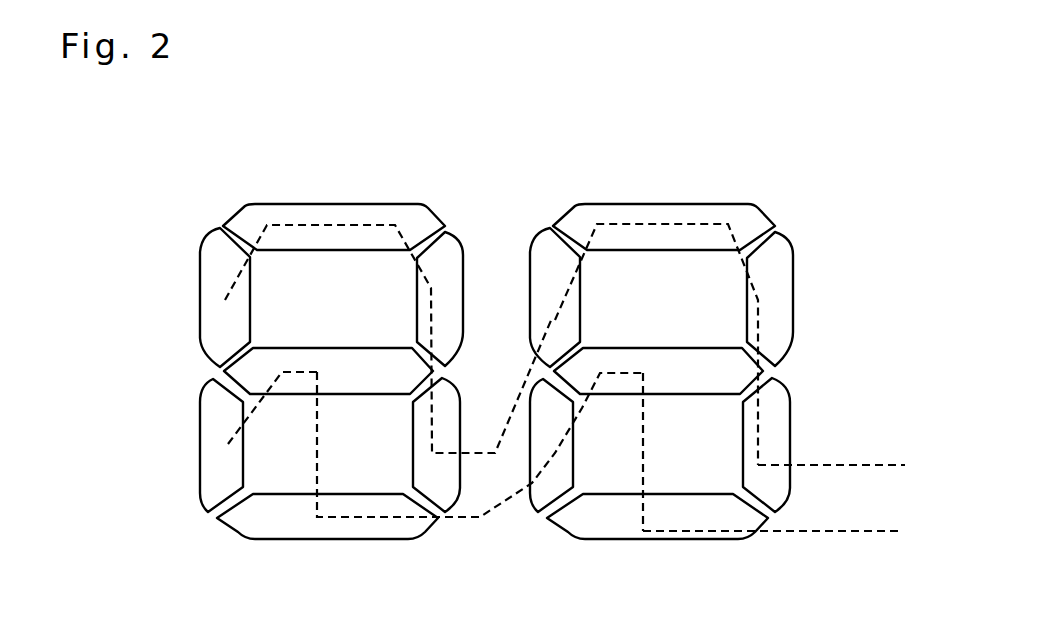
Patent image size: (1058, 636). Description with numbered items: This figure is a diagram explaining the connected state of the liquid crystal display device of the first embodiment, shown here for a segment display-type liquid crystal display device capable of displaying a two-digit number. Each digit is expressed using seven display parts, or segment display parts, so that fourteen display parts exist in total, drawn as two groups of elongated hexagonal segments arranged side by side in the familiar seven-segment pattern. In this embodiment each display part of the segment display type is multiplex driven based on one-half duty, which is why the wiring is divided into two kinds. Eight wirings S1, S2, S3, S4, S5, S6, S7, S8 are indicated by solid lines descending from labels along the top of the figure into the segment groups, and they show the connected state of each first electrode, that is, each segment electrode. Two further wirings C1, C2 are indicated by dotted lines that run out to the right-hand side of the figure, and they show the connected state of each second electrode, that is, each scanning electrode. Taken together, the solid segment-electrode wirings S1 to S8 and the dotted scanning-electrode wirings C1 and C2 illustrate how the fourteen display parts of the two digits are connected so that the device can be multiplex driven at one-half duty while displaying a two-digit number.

The wiring S1 is at (349, 279).
The wiring S2 is at (435, 310).
The wiring S3 is at (420, 195).
The wiring S4 is at (405, 309).
The wiring S5 is at (522, 310).
The wiring S6 is at (634, 319).
The wiring S7 is at (660, 286).
The wiring S8 is at (734, 319).
The wiring C1 is at (855, 464).
The wiring C2 is at (798, 529).